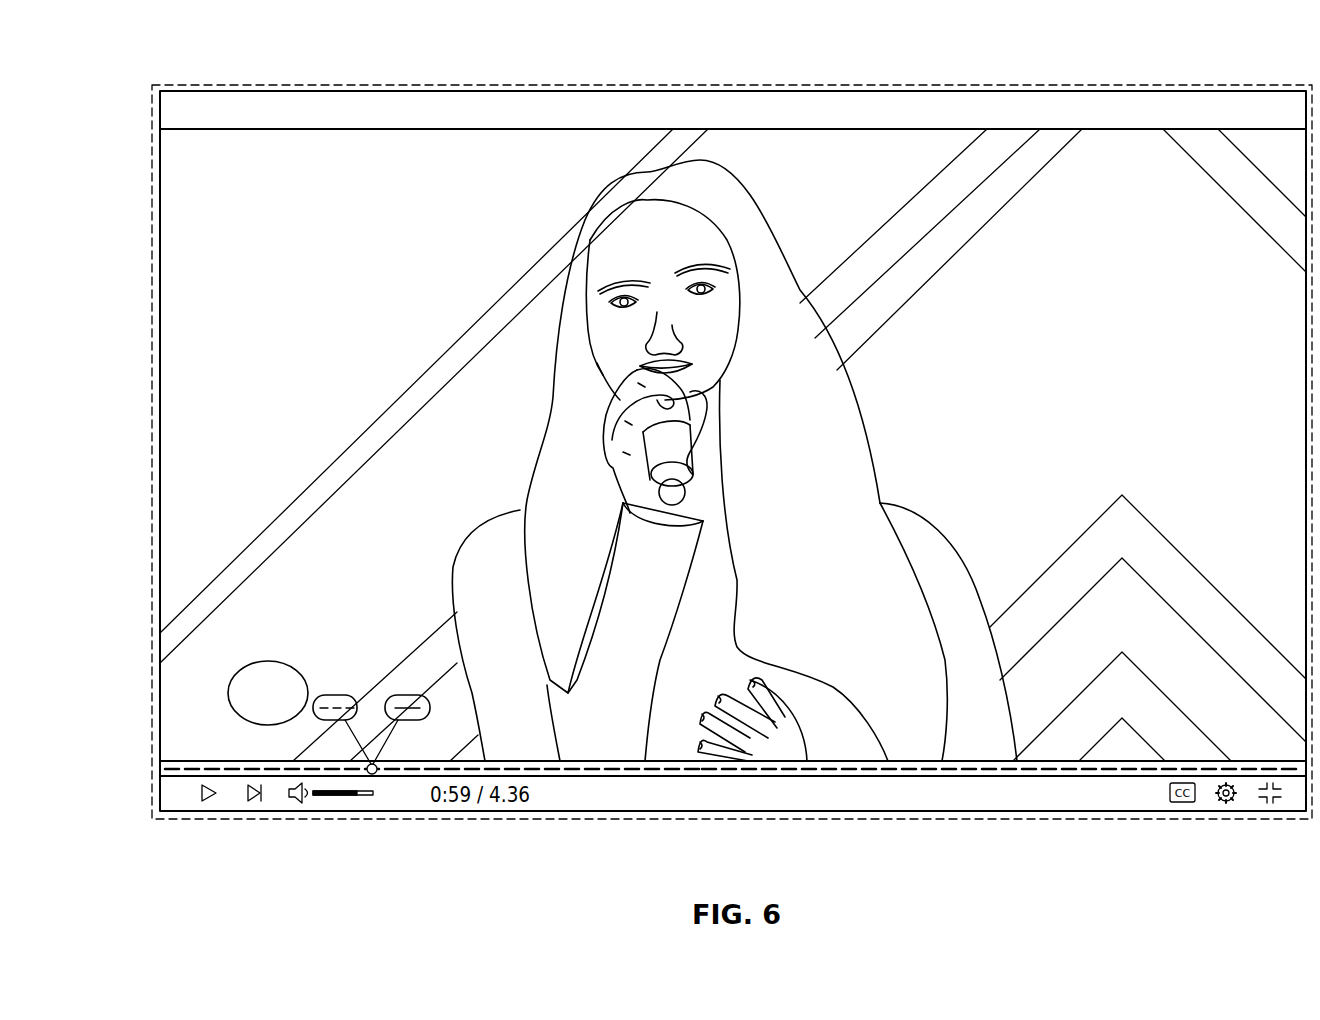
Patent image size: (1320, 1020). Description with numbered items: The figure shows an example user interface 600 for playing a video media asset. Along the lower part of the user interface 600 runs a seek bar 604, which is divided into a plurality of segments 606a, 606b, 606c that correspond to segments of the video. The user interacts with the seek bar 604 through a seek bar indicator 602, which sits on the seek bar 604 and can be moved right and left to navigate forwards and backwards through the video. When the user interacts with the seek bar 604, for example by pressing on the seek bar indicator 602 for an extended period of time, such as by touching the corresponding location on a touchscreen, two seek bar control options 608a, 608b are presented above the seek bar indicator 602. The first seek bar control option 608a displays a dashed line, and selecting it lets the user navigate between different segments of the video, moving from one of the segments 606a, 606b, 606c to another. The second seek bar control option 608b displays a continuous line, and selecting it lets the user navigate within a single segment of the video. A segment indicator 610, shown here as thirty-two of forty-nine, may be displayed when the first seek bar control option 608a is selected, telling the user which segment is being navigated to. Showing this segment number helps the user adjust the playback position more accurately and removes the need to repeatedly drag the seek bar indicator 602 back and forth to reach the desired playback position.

The user interface 600 is at (186, 38).
The seek bar indicator 602 is at (376, 774).
The seek bar 604 is at (600, 770).
The segment 606a is at (800, 770).
The segment 606b is at (950, 770).
The segment 606c is at (1103, 770).
The first seek bar control option 608a is at (337, 695).
The second seek bar control option 608b is at (408, 696).
The segment indicator 610 is at (233, 675).